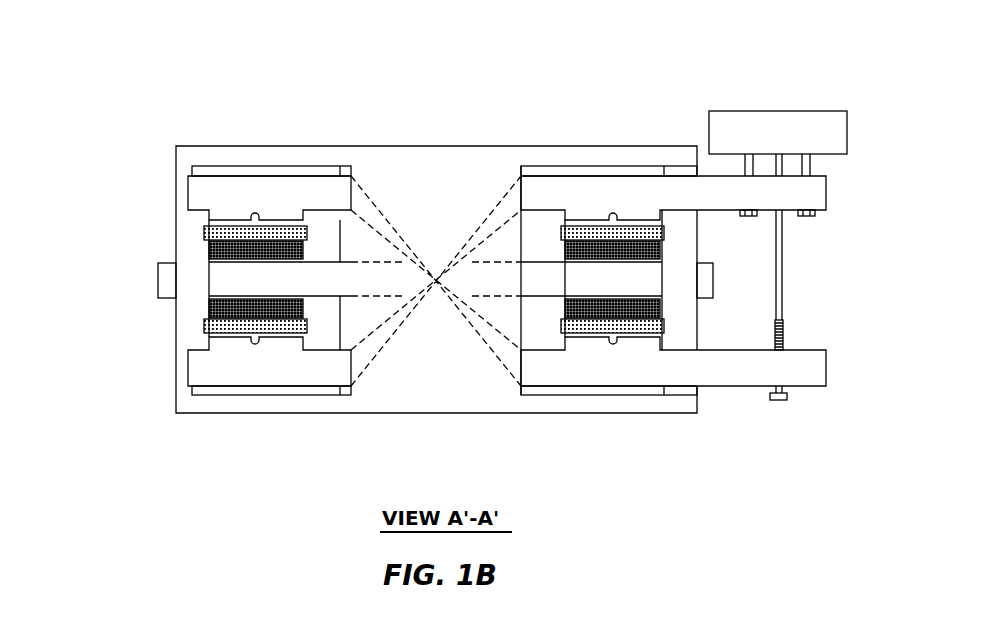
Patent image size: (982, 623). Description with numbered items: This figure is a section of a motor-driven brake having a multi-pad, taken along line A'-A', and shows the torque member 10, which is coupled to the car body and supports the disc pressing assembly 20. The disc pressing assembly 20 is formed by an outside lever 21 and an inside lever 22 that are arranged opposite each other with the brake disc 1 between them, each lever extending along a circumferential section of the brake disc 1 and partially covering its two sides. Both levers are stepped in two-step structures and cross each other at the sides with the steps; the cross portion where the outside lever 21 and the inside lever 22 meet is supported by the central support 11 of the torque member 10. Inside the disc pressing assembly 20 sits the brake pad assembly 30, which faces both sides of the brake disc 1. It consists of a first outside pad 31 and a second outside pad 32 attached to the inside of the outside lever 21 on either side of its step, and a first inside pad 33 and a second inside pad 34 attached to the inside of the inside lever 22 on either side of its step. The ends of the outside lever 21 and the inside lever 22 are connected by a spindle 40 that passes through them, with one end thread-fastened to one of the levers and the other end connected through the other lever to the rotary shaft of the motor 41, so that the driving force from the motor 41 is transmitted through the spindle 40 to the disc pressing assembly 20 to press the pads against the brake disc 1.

The brake disc 1 is at (705, 287).
The torque member 10 is at (438, 146).
The central support 11 is at (440, 333).
The disc pressing assembly 20 is at (193, 280).
The outside lever 21 is at (200, 193).
The inside lever 22 is at (200, 369).
The brake pad assembly 30 is at (454, 279).
The first outside pad 31 is at (637, 327).
The second outside pad 32 is at (279, 236).
The first inside pad 33 is at (588, 237).
The second inside pad 34 is at (283, 325).
The spindle 40 is at (780, 285).
The motor 41 is at (737, 111).